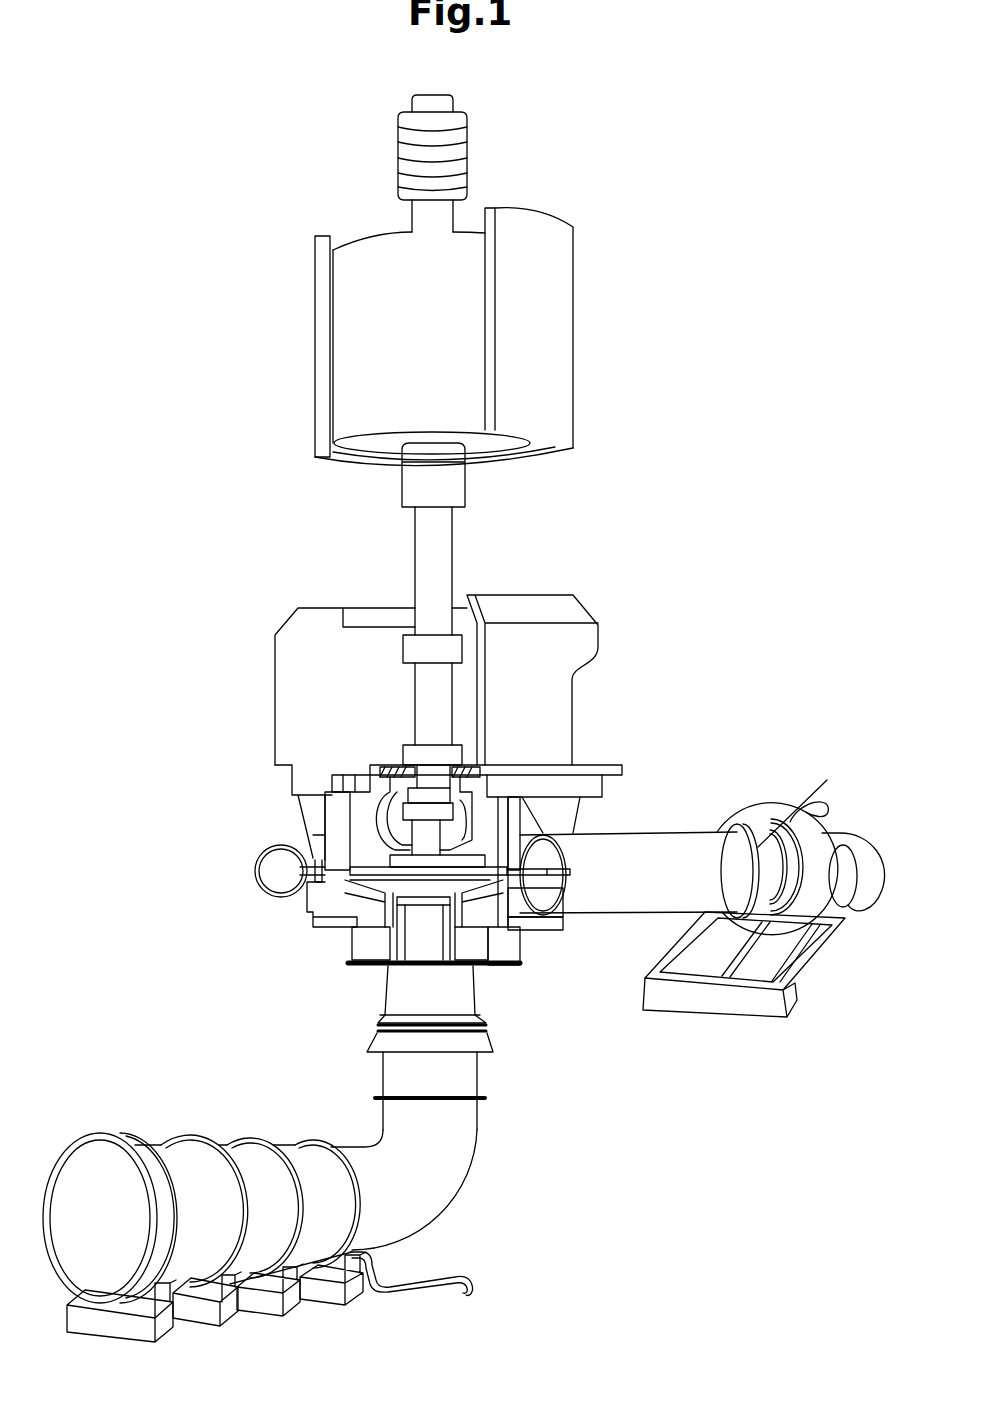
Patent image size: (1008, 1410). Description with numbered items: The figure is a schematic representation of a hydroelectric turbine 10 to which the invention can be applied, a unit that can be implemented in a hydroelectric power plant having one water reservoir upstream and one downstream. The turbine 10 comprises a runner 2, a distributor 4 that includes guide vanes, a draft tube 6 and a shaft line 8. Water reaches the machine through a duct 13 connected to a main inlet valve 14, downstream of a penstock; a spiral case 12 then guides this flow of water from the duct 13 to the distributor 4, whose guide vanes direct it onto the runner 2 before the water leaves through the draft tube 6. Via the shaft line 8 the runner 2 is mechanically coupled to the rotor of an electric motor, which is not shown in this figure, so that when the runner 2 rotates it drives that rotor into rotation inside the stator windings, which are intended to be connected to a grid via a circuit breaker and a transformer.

The hydroelectric turbine 10 is at (717, 347).
The shaft line 8 is at (433, 545).
The distributor 4 is at (341, 895).
The runner 2 is at (412, 873).
The spiral case 12 is at (277, 870).
The duct 13 is at (628, 863).
The main inlet valve 14 is at (827, 900).
The draft tube 6 is at (445, 1073).